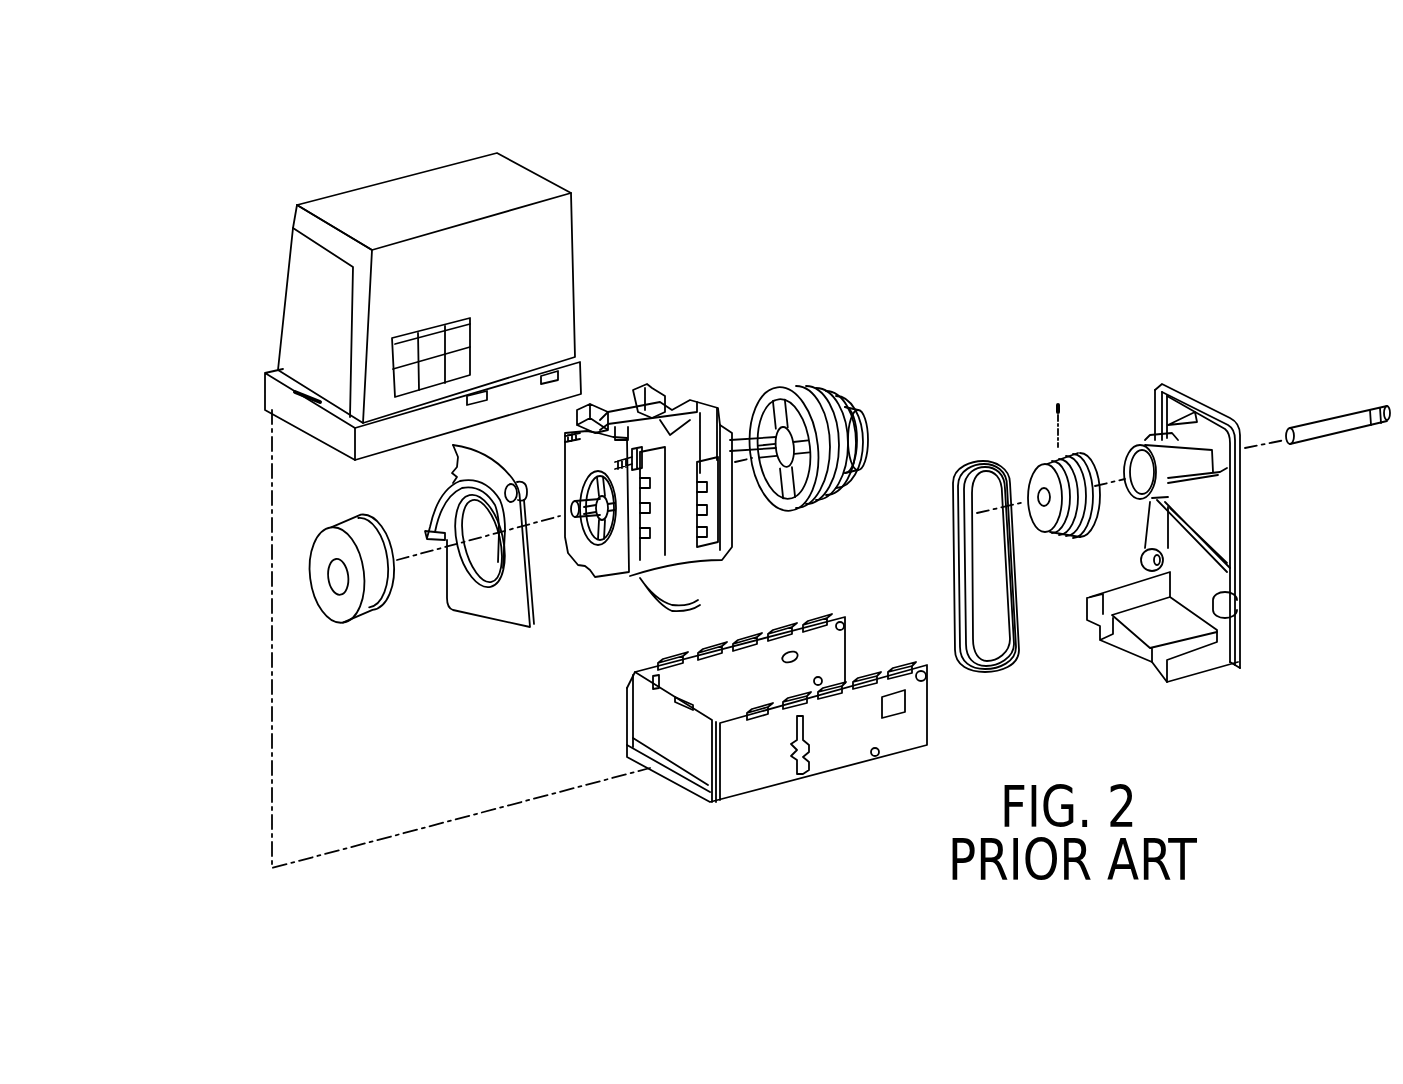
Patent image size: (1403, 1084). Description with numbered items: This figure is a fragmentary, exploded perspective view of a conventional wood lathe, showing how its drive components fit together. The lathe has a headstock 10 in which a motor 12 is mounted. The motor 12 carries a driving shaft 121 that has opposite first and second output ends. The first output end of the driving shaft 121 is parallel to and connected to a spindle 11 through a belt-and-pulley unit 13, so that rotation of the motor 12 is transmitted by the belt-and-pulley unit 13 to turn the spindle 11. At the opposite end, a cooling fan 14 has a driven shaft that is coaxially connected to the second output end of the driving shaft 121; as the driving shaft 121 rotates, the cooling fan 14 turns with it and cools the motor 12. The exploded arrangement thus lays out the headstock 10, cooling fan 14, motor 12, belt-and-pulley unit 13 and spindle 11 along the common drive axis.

The headstock 10 is at (288, 283).
The spindle 11 is at (1328, 418).
The motor 12 is at (667, 430).
The driving shaft 121 is at (588, 562).
The belt-and-pulley unit 13 is at (1062, 450).
The cooling fan 14 is at (329, 615).